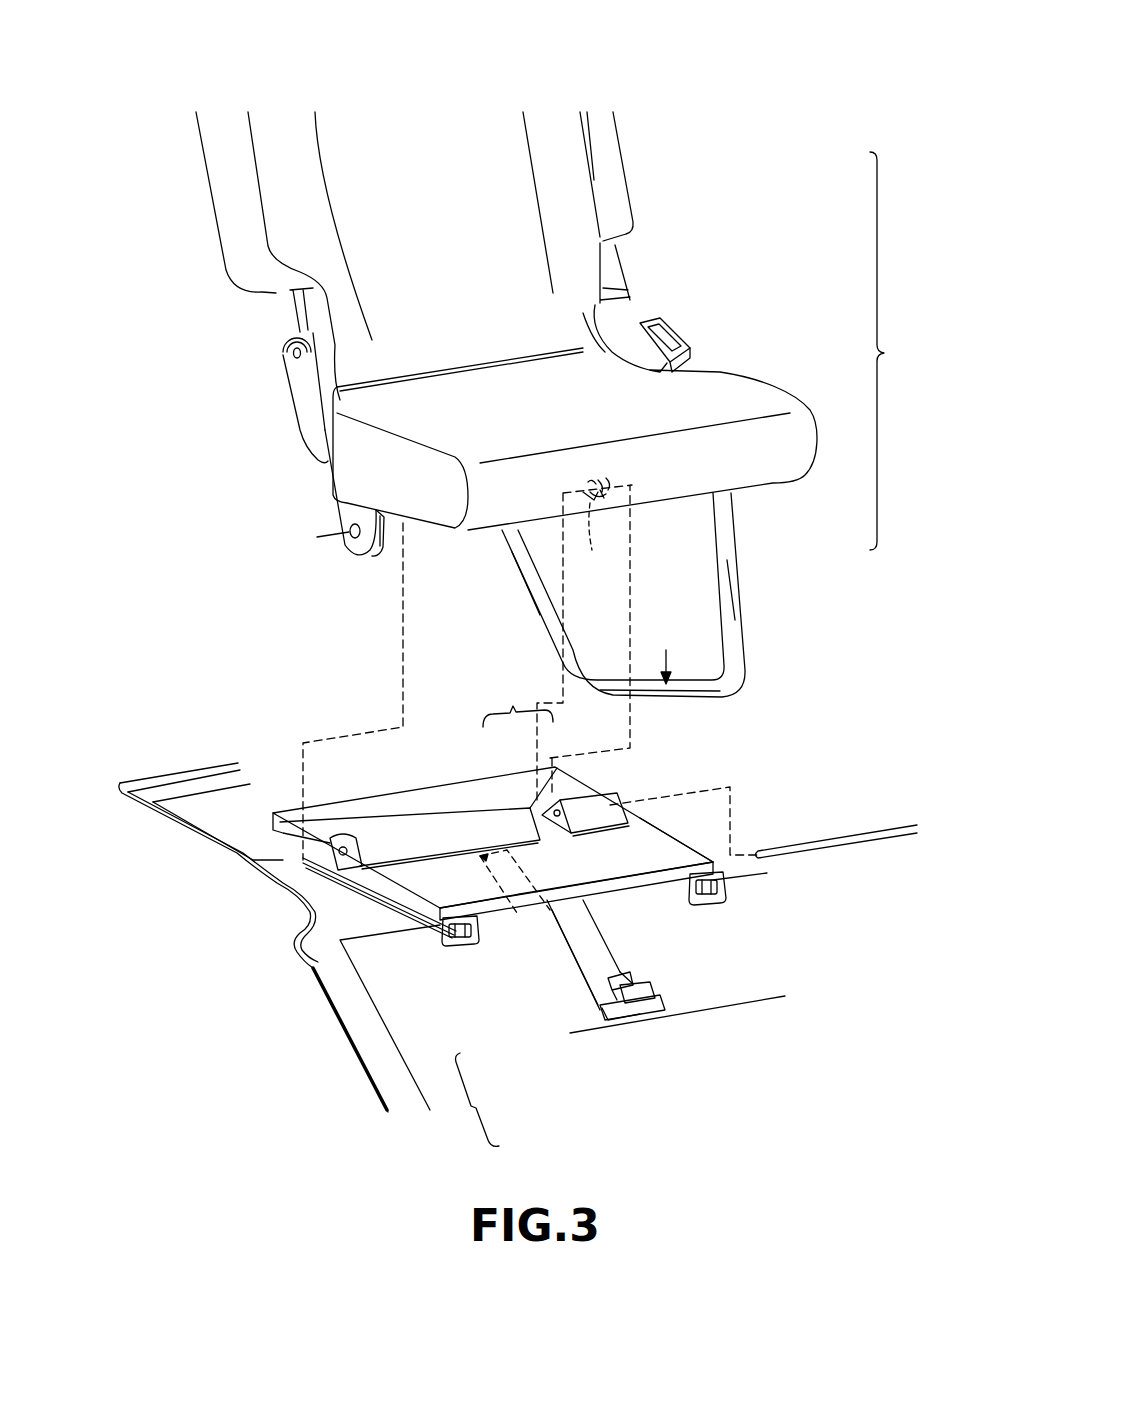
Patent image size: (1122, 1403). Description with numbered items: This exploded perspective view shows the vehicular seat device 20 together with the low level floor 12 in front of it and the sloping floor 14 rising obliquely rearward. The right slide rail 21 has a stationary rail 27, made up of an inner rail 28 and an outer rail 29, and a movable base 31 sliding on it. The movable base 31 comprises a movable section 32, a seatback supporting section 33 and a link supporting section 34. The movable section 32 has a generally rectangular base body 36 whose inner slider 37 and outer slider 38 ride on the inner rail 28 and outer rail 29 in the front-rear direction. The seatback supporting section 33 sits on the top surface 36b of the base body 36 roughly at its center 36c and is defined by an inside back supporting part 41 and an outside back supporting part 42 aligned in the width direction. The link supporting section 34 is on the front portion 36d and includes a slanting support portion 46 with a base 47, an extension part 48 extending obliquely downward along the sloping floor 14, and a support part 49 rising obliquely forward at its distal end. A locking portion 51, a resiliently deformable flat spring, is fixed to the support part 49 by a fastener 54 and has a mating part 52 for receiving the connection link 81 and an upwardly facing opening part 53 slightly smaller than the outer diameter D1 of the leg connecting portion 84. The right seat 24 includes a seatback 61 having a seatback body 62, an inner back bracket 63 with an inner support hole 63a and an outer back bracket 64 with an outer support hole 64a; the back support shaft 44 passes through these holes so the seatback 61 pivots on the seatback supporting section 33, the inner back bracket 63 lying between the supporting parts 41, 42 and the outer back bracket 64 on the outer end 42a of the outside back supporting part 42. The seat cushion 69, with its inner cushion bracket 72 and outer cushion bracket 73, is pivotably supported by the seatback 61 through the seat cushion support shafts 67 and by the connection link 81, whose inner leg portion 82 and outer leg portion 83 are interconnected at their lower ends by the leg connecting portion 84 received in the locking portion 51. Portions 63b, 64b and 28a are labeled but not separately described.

The vehicular seat device 20 is at (745, 97).
The seatback body 62 is at (458, 166).
The seatback 61 is at (603, 193).
The inner cushion bracket 72 is at (612, 340).
The seat cushion 69 is at (716, 378).
The right seat 24 is at (893, 351).
The seat cushion support shaft 67 is at (292, 352).
The outer cushion bracket 73 is at (300, 415).
The outer back bracket 64 is at (340, 514).
The outer support hole 64a is at (349, 538).
The engaging portion 64b is at (372, 565).
The inner back bracket 63 is at (612, 478).
The inner support hole 63a is at (584, 644).
The anchor hook 63b is at (622, 490).
The connection link 81 is at (738, 558).
The inner leg portion 82 is at (738, 598).
The outer leg portion 83 is at (535, 582).
The leg connecting portion 84 is at (700, 672).
The outer diameter D1 is at (664, 652).
The right slide rail 21 is at (314, 782).
The movable base 31 is at (397, 780).
The outside back supporting part 42 is at (500, 820).
The outer end 42a is at (337, 849).
The inside back supporting part 41 is at (592, 807).
The seatback supporting section 33 is at (518, 702).
The base body 36 is at (452, 797).
The movable section 32 is at (660, 806).
The top surface 36b is at (660, 856).
The center 36c is at (468, 858).
The front portion 36d is at (565, 876).
The base 47 is at (495, 880).
The stationary rail 27 is at (350, 872).
The outer slider 38 is at (448, 934).
The outer rail 29 is at (460, 946).
The inner rail 28 is at (736, 887).
The slider top 28a is at (722, 870).
The inner slider 37 is at (706, 902).
The back support shaft 44 is at (870, 845).
The extension part 48 is at (590, 940).
The slanting support portion 46 is at (553, 966).
The opening part 53 is at (640, 980).
The fastener 54 is at (626, 990).
The support part 49 is at (633, 1015).
The mating part 52 is at (614, 1012).
The locking portion 51 is at (600, 1002).
The link supporting section 34 is at (467, 1099).
The low level floor 12 is at (770, 1050).
The sloping floor 14 is at (792, 952).